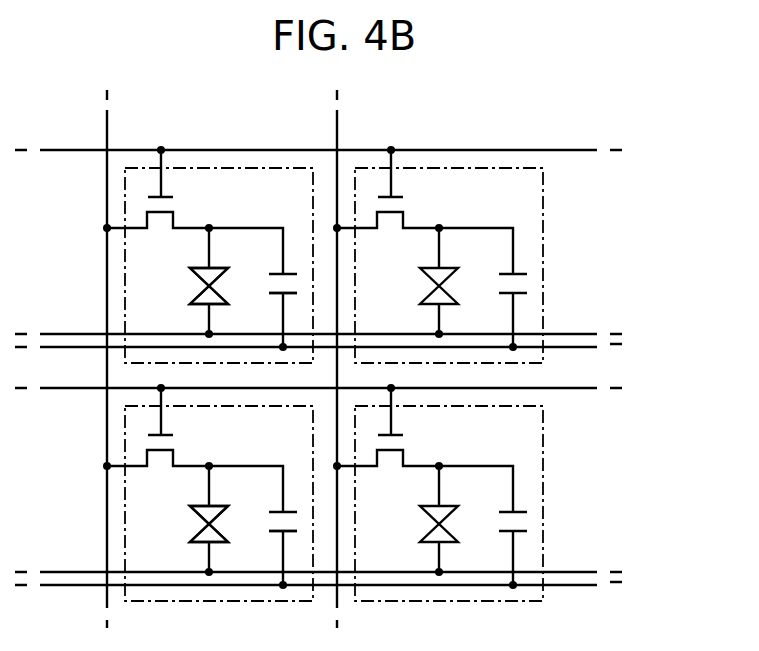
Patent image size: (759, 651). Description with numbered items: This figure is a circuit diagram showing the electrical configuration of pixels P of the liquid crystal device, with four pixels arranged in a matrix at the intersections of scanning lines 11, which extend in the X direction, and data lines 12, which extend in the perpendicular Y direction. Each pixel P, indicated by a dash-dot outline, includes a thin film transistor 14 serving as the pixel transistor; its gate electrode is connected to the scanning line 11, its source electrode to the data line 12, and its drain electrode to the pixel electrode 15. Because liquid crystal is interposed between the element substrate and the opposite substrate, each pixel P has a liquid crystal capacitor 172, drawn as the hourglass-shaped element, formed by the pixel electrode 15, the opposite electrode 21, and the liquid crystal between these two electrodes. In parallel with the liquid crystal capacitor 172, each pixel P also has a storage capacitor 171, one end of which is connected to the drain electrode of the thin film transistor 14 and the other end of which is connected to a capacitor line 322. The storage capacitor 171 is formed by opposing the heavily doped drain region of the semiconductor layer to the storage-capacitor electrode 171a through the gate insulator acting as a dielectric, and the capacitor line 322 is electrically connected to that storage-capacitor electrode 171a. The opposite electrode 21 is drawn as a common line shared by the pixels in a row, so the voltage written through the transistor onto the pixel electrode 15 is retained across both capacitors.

The scanning line 11 is at (80, 150).
The data line 12 is at (107, 118).
The pixel P is at (245, 168).
The thin film transistor 14 is at (175, 199).
The pixel electrode 15 is at (200, 268).
The liquid crystal capacitor 172 is at (200, 282).
The storage capacitor 171 is at (297, 268).
The storage-capacitor electrode 171a is at (273, 295).
The opposite electrode 21 is at (575, 334).
The capacitor line 322 is at (596, 349).